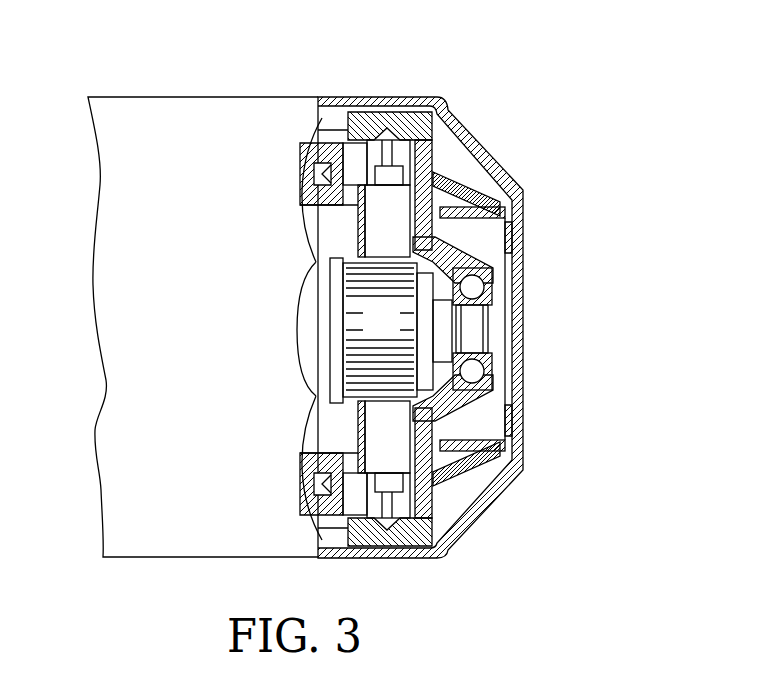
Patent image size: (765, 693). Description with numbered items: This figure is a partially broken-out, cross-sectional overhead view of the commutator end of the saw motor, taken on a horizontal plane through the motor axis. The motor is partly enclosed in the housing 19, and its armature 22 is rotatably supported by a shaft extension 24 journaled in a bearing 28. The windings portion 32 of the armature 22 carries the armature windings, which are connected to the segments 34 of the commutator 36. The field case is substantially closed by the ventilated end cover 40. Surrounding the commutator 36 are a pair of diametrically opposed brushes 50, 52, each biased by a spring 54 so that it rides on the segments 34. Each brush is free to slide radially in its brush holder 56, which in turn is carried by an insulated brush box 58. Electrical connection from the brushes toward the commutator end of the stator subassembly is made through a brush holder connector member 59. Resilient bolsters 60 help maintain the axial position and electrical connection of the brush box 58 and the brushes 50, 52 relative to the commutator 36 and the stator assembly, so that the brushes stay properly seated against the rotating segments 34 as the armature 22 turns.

The housing 19 is at (151, 97).
The armature 22 is at (309, 244).
The shaft extension 24 is at (485, 398).
The bearing 28 is at (480, 303).
The windings portion 32 is at (324, 289).
The segments 34 is at (398, 326).
The commutator 36 is at (355, 349).
The ventilated end cover 40 is at (523, 242).
The brush 50 is at (398, 229).
The brush 52 is at (398, 447).
The spring 54 is at (388, 140).
The brush holder 56 is at (313, 246).
The brush box 58 is at (342, 121).
The brush holder connector member 59 is at (320, 134).
The resilient bolsters 60 is at (440, 218).